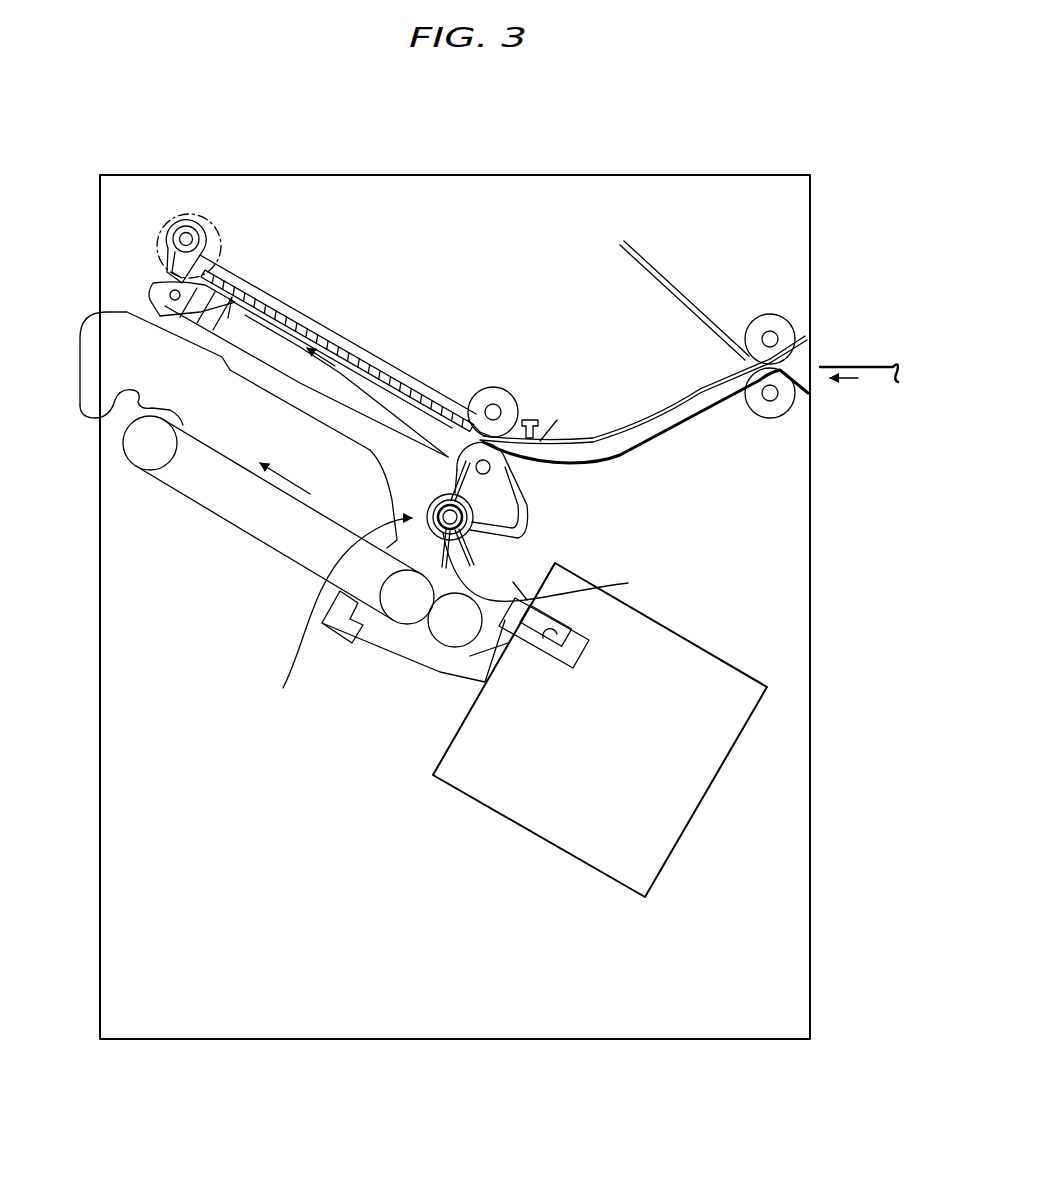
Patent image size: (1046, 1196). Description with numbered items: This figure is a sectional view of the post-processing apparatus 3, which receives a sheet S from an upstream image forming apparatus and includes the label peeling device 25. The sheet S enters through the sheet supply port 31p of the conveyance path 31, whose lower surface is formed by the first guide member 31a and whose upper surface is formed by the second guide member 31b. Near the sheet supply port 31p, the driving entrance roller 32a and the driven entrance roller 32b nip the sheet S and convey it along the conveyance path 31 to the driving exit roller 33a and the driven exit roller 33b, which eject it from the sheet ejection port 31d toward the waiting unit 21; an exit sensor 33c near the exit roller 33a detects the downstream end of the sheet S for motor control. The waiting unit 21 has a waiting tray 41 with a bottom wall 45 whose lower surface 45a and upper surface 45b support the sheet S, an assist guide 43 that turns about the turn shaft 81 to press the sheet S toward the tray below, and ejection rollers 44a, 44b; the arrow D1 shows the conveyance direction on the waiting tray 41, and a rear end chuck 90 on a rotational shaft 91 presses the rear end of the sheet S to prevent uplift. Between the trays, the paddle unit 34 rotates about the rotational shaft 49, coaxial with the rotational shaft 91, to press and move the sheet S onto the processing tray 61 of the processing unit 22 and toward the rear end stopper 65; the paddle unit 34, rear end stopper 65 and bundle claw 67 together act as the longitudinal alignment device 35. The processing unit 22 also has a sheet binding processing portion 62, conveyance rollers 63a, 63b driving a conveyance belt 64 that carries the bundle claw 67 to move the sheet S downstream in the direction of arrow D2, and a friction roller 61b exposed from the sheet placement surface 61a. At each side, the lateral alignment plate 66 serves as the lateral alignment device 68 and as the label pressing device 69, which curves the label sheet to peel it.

The post-processing apparatus 3 is at (750, 166).
The turn shaft 81 is at (190, 228).
The ejection roller 44a is at (165, 241).
The ejection roller 44b is at (150, 300).
The waiting unit 21 is at (320, 359).
The assist guide 43 is at (323, 325).
The bottom wall 45 is at (308, 365).
The lower surface 45a is at (350, 411).
The upper surface 45b is at (280, 337).
The arrow D1 is at (350, 380).
The label peeling device 25 is at (208, 430).
The waiting tray 41 is at (272, 375).
The lateral alignment plate 66 is at (101, 451).
The lateral alignment device 68 is at (131, 407).
The label pressing device 69 is at (92, 416).
The conveyance roller 63a is at (148, 455).
The sheet placement surface 61a is at (273, 587).
The processing tray 61 is at (273, 587).
The conveyance belt 64 is at (283, 553).
The friction roller 61b is at (405, 600).
The conveyance roller 63b is at (455, 625).
The arrow D2 is at (235, 448).
The processing unit 22 is at (366, 649).
The bundle claw 67 is at (343, 628).
The paddle unit 34 is at (333, 633).
The longitudinal alignment device 35 is at (347, 603).
The exit roller 33a is at (494, 402).
The exit roller 33b is at (460, 466).
The exit sensor 33c is at (530, 418).
The sheet ejection port 31d is at (468, 420).
The conveyance path 31 is at (689, 389).
The first guide member 31a is at (625, 462).
The second guide member 31b is at (615, 437).
The sheet supply port 31p is at (800, 358).
The entrance roller 32a is at (770, 315).
The entrance roller 32b is at (760, 394).
The sheet S is at (878, 382).
The rear end chuck 90 is at (537, 519).
The rotational shaft 49 is at (572, 567).
The rotational shaft 91 is at (535, 567).
The rear end stopper 65 is at (543, 640).
The sheet binding processing portion 62 is at (702, 790).